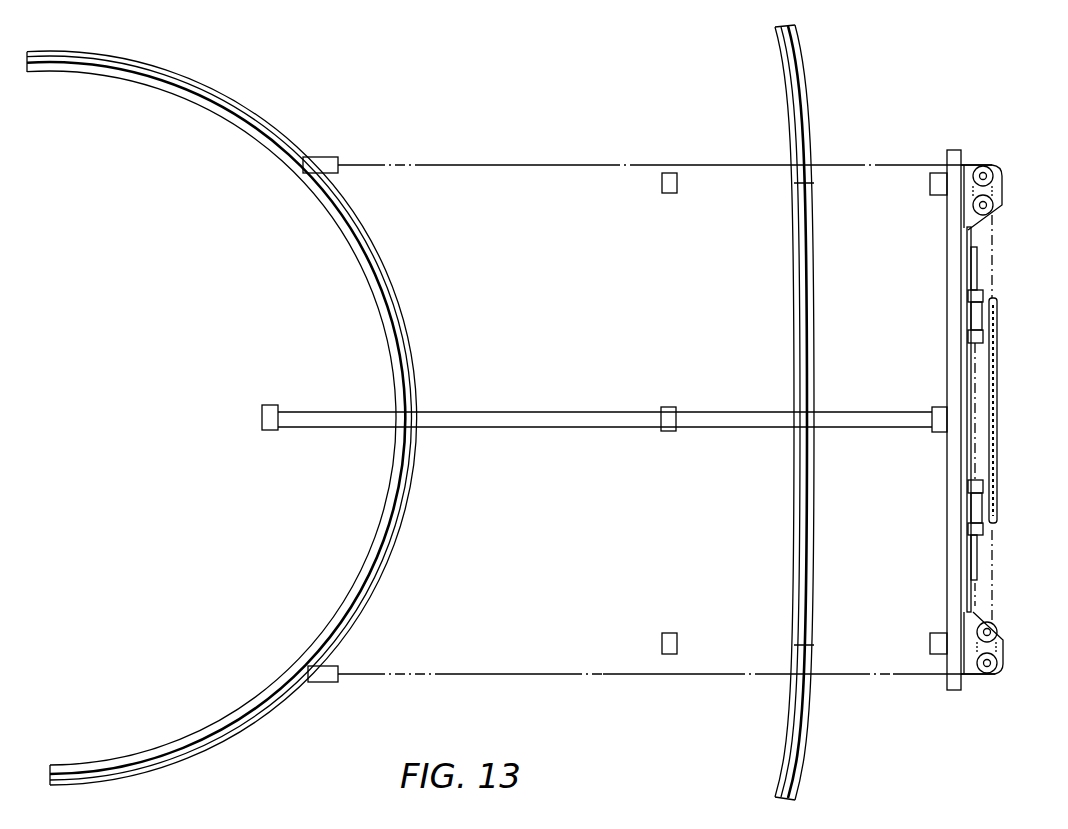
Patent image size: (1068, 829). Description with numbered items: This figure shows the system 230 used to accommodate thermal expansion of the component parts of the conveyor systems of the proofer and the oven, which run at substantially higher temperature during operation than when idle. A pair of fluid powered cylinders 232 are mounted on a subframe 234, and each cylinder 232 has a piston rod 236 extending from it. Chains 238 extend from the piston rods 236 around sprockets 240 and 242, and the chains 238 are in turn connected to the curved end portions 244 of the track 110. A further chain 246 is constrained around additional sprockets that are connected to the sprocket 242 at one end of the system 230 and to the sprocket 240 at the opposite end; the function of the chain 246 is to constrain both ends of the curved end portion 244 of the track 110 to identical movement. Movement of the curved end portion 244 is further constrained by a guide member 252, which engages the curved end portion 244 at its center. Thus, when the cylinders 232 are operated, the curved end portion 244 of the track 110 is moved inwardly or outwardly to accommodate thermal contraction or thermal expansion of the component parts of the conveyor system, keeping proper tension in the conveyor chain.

The track 110 is at (378, 313).
The curved end portion 244 is at (415, 362).
The system 230 is at (784, 160).
The chains 238 is at (524, 164).
The guide member 252 is at (560, 411).
The subframe 234 is at (950, 392).
The sprocket 240 is at (995, 205).
The sprocket 242 is at (994, 175).
The fluid powered cylinders 232 is at (975, 320).
The piston rod 236 is at (978, 257).
The chain 246 is at (997, 592).